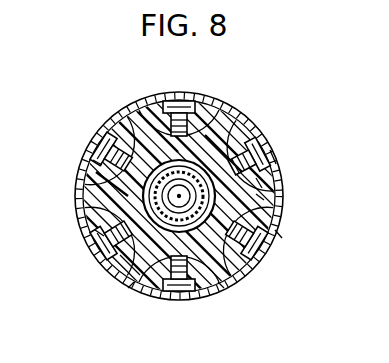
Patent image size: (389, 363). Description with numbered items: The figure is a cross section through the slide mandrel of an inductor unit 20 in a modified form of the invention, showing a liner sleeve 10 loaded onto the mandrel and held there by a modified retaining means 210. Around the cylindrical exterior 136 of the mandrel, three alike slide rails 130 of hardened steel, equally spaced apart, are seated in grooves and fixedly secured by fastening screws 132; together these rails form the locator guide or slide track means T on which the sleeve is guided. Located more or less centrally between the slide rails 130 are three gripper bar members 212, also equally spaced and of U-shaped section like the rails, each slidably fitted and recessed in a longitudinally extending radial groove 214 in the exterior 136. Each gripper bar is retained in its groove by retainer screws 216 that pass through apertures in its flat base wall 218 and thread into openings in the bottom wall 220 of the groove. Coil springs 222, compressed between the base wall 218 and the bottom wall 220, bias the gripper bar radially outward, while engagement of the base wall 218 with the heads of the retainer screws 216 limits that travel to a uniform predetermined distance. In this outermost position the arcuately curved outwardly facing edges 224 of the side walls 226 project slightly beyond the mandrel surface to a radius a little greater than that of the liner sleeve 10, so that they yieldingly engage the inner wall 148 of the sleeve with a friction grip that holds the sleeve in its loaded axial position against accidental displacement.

The liner sleeve 10 is at (233, 110).
The inductor unit 20 is at (136, 113).
The slide rail 130 is at (207, 108).
The fastening screw 132 is at (175, 104).
The cylindrical exterior 136 is at (95, 232).
The inner wall 148 is at (92, 162).
The retaining means 210 is at (272, 157).
The gripper bar member 212 is at (125, 118).
The radial groove 214 is at (260, 145).
The retainer screw 216 is at (98, 150).
The base wall 218 is at (258, 183).
The bottom wall 220 is at (260, 197).
The coil spring 222 is at (115, 183).
The outwardly facing edge 224 is at (187, 300).
The side wall 226 is at (130, 290).
The slide track means T is at (278, 235).